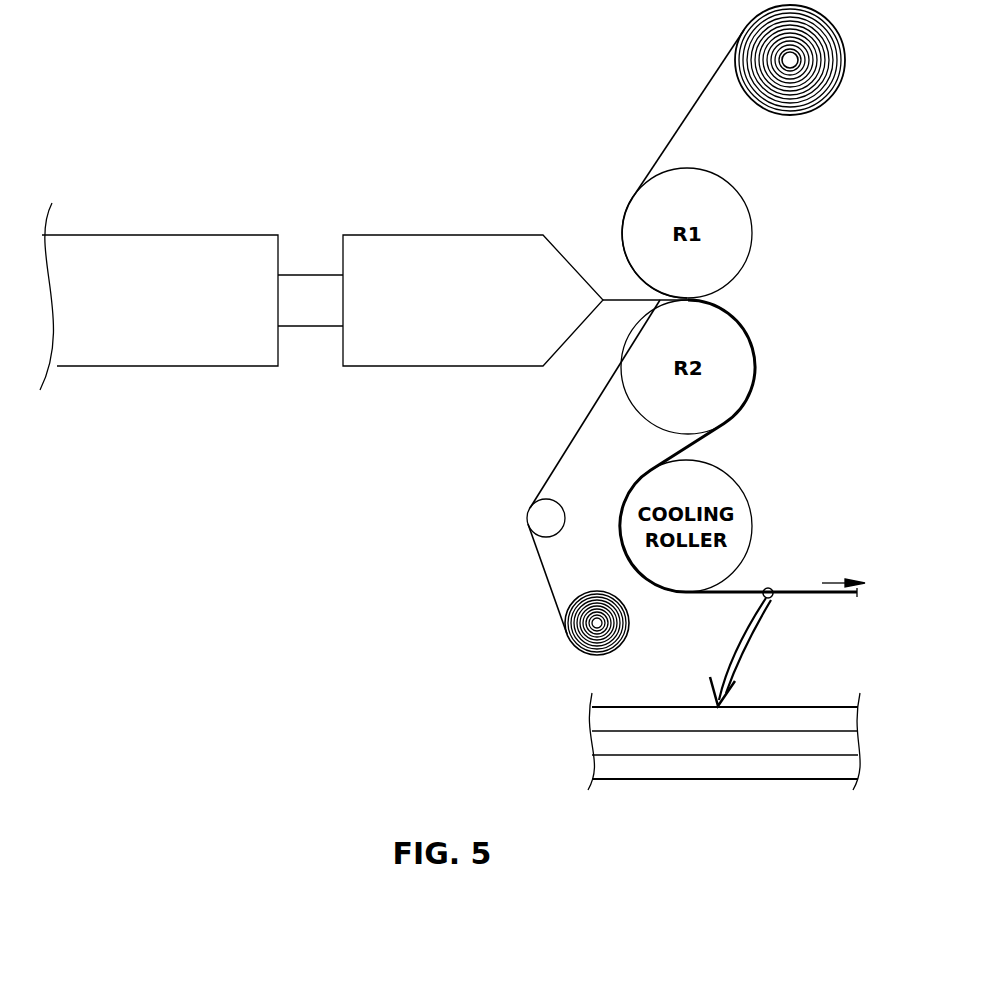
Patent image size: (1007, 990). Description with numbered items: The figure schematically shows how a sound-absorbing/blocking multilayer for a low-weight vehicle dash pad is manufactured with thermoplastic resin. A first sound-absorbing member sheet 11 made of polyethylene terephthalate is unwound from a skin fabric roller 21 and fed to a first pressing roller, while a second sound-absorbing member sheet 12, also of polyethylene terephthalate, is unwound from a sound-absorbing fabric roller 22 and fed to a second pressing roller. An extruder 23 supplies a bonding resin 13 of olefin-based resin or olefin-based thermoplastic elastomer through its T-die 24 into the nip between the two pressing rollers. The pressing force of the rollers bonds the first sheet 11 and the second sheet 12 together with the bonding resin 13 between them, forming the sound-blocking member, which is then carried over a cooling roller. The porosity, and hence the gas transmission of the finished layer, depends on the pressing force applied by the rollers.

The first sound-absorbing member sheet 11 is at (680, 123).
The second sound-absorbing member sheet 12 is at (550, 472).
The bonding resin 13 is at (613, 295).
The skin fabric roller 21 is at (800, 90).
The sound-absorbing fabric roller 22 is at (572, 645).
The extruder 23 is at (210, 247).
The T-die 24 is at (468, 252).